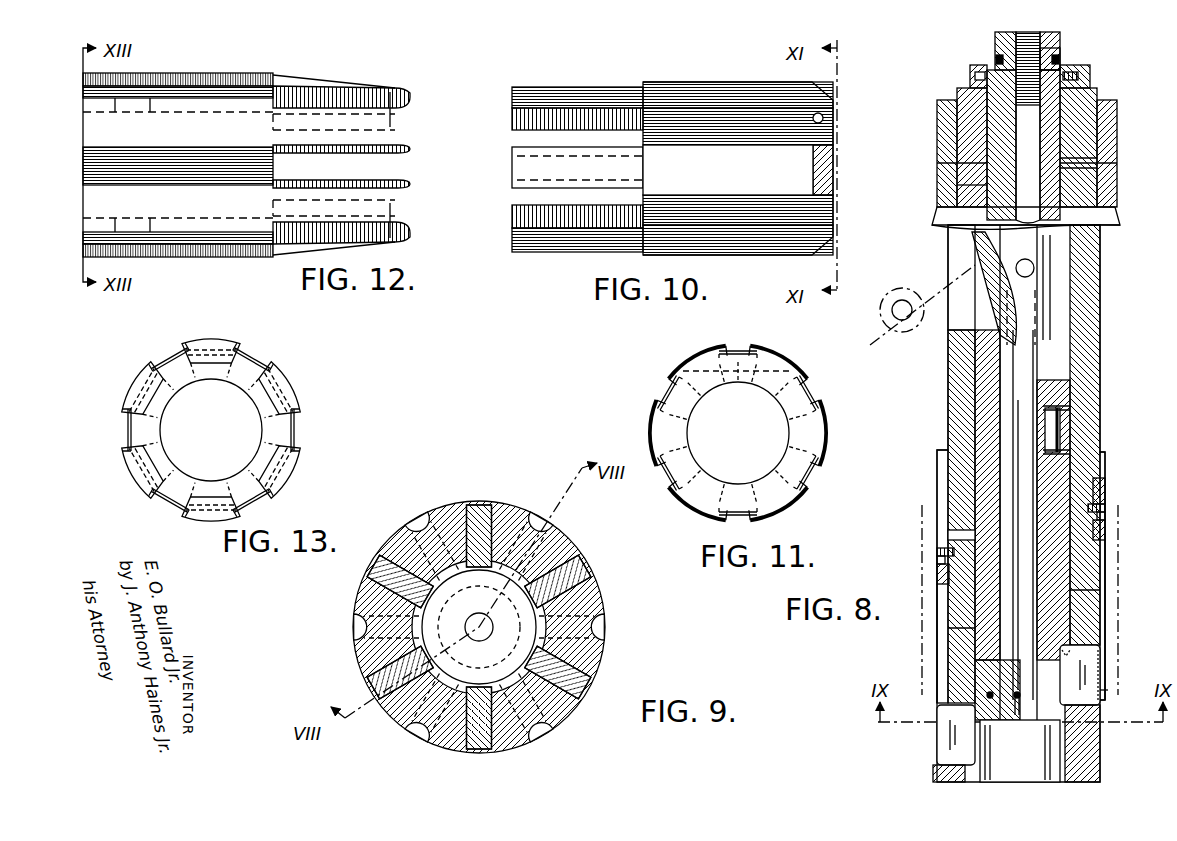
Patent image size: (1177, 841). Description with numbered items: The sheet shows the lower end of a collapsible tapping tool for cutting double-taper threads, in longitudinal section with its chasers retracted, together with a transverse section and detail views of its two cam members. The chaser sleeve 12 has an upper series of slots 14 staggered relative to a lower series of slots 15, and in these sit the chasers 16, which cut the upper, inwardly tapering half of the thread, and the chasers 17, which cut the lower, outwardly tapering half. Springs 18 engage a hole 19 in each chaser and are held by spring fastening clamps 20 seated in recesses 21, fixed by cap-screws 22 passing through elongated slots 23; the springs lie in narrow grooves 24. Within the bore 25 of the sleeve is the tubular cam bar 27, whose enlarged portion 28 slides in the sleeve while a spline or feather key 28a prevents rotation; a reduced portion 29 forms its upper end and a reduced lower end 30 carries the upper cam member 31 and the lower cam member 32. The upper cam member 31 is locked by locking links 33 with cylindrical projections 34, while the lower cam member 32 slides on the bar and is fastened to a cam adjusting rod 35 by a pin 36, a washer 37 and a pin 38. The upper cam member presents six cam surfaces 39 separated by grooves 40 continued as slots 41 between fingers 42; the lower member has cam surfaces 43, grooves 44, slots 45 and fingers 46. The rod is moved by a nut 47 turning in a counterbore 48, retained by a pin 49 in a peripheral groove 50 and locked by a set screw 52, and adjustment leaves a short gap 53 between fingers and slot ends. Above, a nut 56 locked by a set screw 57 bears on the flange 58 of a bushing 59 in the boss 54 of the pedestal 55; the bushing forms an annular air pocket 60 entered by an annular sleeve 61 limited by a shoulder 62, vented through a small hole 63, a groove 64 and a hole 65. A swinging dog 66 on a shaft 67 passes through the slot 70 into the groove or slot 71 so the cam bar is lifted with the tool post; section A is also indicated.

In FIG. 8, the chaser sleeve 12 is at (1100, 737).
In FIG. 9, the slots of the uppermost series 14 is at (472, 627).
In FIG. 8, the slots of the uppermost series 14 is at (1105, 690).
In FIG. 9, the slots of the lowermost series 15 is at (485, 627).
In FIG. 8, the slots of the lowermost series 15 is at (935, 766).
In FIG. 9, the chasers 16 is at (514, 693).
In FIG. 8, the chasers 16 is at (1085, 670).
In FIG. 9, the chasers 17 is at (492, 627).
In FIG. 8, the chasers 17 is at (945, 742).
In FIG. 8, the springs 18 is at (1090, 605).
In FIG. 8, the hole 19 is at (1100, 652).
In FIG. 8, the spring fastening clamps 20 is at (1105, 532).
In FIG. 8, the recesses 21 is at (1105, 462).
In FIG. 8, the cap-screws 22 is at (1095, 506).
In FIG. 8, the elongated slots 23 is at (1105, 518).
In FIG. 8, the narrow grooves 24 is at (1100, 554).
In FIG. 8, the bore 25 is at (1065, 765).
In FIG. 8, the cam bar 27 is at (1060, 283).
In FIG. 8, the enlarged portion 28 is at (1060, 303).
In FIG. 8, the spline or feather key 28a is at (1043, 325).
In FIG. 8, the reduced portion 29 is at (1050, 193).
In FIG. 8, the reduced lower end 30 is at (1000, 480).
In FIG. 12, the upper cam member 31 is at (83, 205).
In FIG. 13, the upper cam member 31 is at (242, 430).
In FIG. 8, the upper cam member 31 is at (1105, 482).
In FIG. 10, the lower cam member 32 is at (688, 165).
In FIG. 11, the lower cam member 32 is at (738, 431).
In FIG. 8, the lower cam member 32 is at (975, 655).
In FIG. 8, the locking links 33 is at (1060, 430).
In FIG. 8, the cylindrical projections 34 is at (1062, 408).
In FIG. 9, the cam adjusting rod 35 is at (491, 627).
In FIG. 8, the cam adjusting rod 35 is at (1020, 605).
In FIG. 8, the pin 36 is at (1015, 718).
In FIG. 9, the washer 37 is at (533, 627).
In FIG. 8, the washer 37 is at (1042, 722).
In FIG. 8, the pin 38 is at (993, 717).
In FIG. 12, the cam surfaces 39 is at (183, 74).
In FIG. 13, the cam surfaces 39 is at (204, 419).
In FIG. 12, the grooves 40 is at (242, 73).
In FIG. 13, the grooves 40 is at (207, 427).
In FIG. 12, the slots 41 is at (410, 98).
In FIG. 12, the fingers 42 is at (383, 87).
In FIG. 10, the cam surfaces 43 is at (808, 84).
In FIG. 11, the cam surfaces 43 is at (723, 426).
In FIG. 10, the grooves 44 is at (833, 128).
In FIG. 11, the grooves 44 is at (729, 420).
In FIG. 10, the slots 45 is at (512, 130).
In FIG. 10, the fingers 46 is at (512, 100).
In FIG. 8, the nut 47 is at (995, 40).
In FIG. 8, the counterbore 48 is at (1062, 55).
In FIG. 8, the pin 49 is at (994, 58).
In FIG. 8, the peripheral groove 50 is at (1060, 60).
In FIG. 8, the set screw 52 is at (1050, 40).
In FIG. 8, the gap 53 is at (975, 535).
In FIG. 8, the boss 54 is at (1115, 112).
In FIG. 8, the pedestal 55 is at (1105, 218).
In FIG. 8, the nut 56 is at (970, 78).
In FIG. 8, the set screw 57 is at (1085, 73).
In FIG. 8, the flange 58 is at (1097, 92).
In FIG. 8, the bushing 59 is at (970, 135).
In FIG. 8, the annular air pocket 60 is at (990, 170).
In FIG. 8, the annular sleeve 61 is at (945, 110).
In FIG. 8, the shoulder 62 is at (985, 163).
In FIG. 8, the small hole 63 is at (1063, 163).
In FIG. 8, the groove 64 is at (1078, 160).
In FIG. 8, the hole 65 is at (1075, 166).
In FIG. 8, the swinging dog 66 is at (892, 312).
In FIG. 8, the shaft 67 is at (890, 320).
In FIG. 8, the slot 70 is at (955, 255).
In FIG. 8, the groove or slot 71 is at (980, 315).
In FIG. 8, the section A is at (1118, 568).